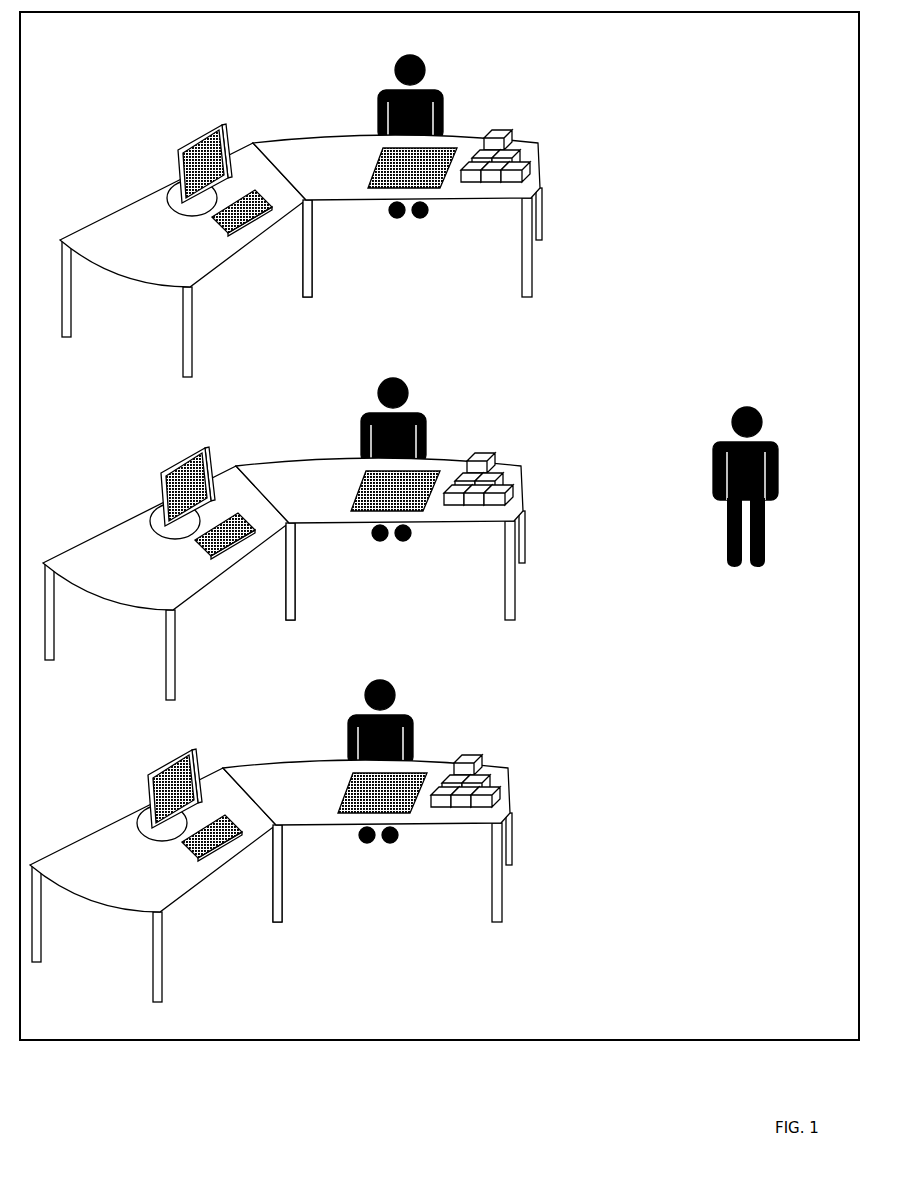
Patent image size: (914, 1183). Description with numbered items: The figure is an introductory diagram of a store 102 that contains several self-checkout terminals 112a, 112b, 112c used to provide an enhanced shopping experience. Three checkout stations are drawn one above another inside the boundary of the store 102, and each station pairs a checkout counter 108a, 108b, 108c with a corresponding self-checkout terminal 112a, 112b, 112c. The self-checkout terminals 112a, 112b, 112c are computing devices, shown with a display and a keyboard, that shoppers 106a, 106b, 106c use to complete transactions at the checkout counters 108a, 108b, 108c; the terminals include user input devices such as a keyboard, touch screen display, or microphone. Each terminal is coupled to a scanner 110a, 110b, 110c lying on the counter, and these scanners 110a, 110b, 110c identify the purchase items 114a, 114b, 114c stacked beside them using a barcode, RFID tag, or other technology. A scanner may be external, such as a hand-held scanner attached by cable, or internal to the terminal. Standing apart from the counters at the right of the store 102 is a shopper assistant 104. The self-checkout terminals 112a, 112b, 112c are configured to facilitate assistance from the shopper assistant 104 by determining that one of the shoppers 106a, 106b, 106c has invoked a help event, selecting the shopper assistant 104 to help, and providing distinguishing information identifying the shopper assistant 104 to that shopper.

The store 102 is at (439, 526).
The shopper assistant 104 is at (763, 563).
The shopper 106a is at (380, 102).
The shopper 106b is at (354, 453).
The shopper 106c is at (341, 755).
The checkout counter 108a is at (540, 183).
The checkout counter 108b is at (434, 539).
The checkout counter 108c is at (421, 841).
The scanner 110a is at (382, 155).
The scanner 110b is at (328, 470).
The scanner 110c is at (315, 772).
The self-checkout terminal 112a is at (186, 250).
The self-checkout terminal 112b is at (169, 573).
The self-checkout terminal 112c is at (156, 875).
The purchase items 114a is at (533, 162).
The purchase items 114b is at (533, 465).
The purchase items 114c is at (520, 767).